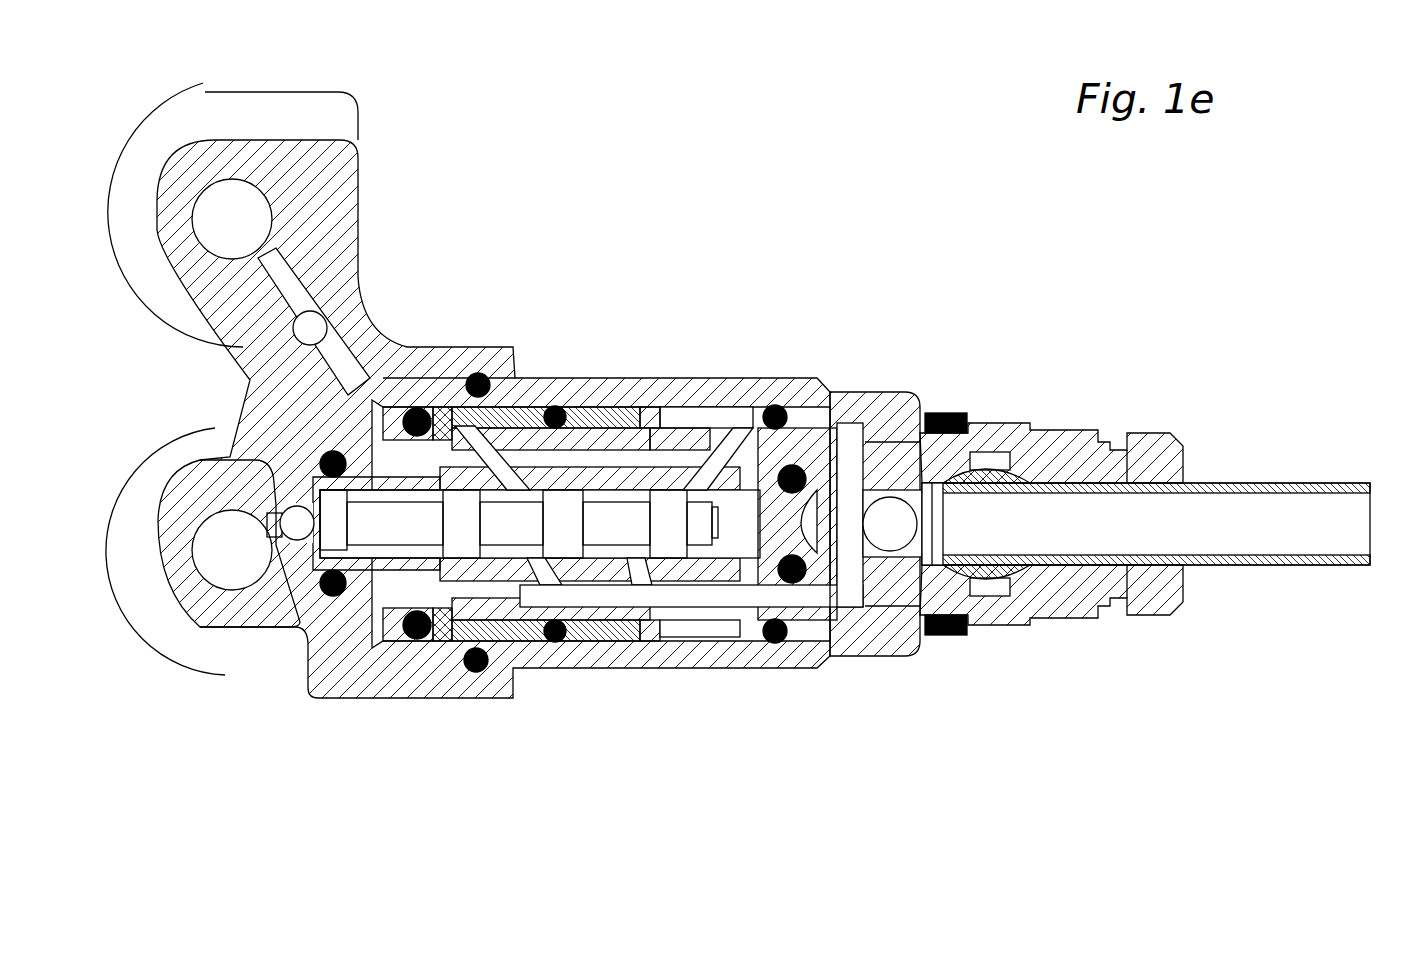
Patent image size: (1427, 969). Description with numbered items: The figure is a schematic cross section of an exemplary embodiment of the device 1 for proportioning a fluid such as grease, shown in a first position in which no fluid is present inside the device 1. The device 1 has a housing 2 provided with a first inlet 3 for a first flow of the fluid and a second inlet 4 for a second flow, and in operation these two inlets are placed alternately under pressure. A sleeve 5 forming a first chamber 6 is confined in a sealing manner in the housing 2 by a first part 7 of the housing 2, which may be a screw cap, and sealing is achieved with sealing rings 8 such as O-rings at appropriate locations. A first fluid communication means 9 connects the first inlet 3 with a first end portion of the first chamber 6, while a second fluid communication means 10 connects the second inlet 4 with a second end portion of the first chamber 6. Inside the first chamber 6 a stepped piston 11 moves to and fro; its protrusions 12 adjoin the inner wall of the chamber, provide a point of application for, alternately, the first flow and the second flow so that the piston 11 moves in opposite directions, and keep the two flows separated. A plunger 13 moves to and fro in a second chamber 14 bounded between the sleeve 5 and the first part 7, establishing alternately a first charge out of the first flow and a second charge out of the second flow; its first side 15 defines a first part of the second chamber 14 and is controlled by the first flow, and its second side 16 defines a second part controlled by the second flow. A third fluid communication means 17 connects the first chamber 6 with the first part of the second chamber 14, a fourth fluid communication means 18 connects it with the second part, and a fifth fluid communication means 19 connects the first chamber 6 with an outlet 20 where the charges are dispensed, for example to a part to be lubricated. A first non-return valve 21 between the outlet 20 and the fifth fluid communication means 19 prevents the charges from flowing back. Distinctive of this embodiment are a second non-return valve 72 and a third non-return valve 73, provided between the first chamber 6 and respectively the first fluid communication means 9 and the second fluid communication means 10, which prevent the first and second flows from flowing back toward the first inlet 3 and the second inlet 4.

The device 1 is at (678, 272).
The housing 2 is at (330, 187).
The first inlet 3 is at (178, 625).
The second inlet 4 is at (228, 214).
The sleeve 5 is at (818, 405).
The first chamber 6 is at (745, 533).
The first part of the housing 7 is at (590, 392).
The sealing rings 8 is at (478, 383).
The first fluid communication means 9 is at (277, 517).
The second fluid communication means 10 is at (280, 288).
The piston 11 is at (382, 523).
The protrusions 12 is at (458, 525).
The plunger 13 is at (560, 432).
The second chamber 14 is at (676, 417).
The first side of the plunger 15 is at (453, 395).
The second side of the plunger 16 is at (637, 405).
The third fluid communication means 17 is at (505, 435).
The fourth fluid communication means 18 is at (727, 432).
The fifth fluid communication means 19 is at (643, 577).
The outlet 20 is at (1243, 513).
The first non-return valve 21 is at (888, 512).
The second non-return valve 72 is at (298, 527).
The third non-return valve 73 is at (312, 328).